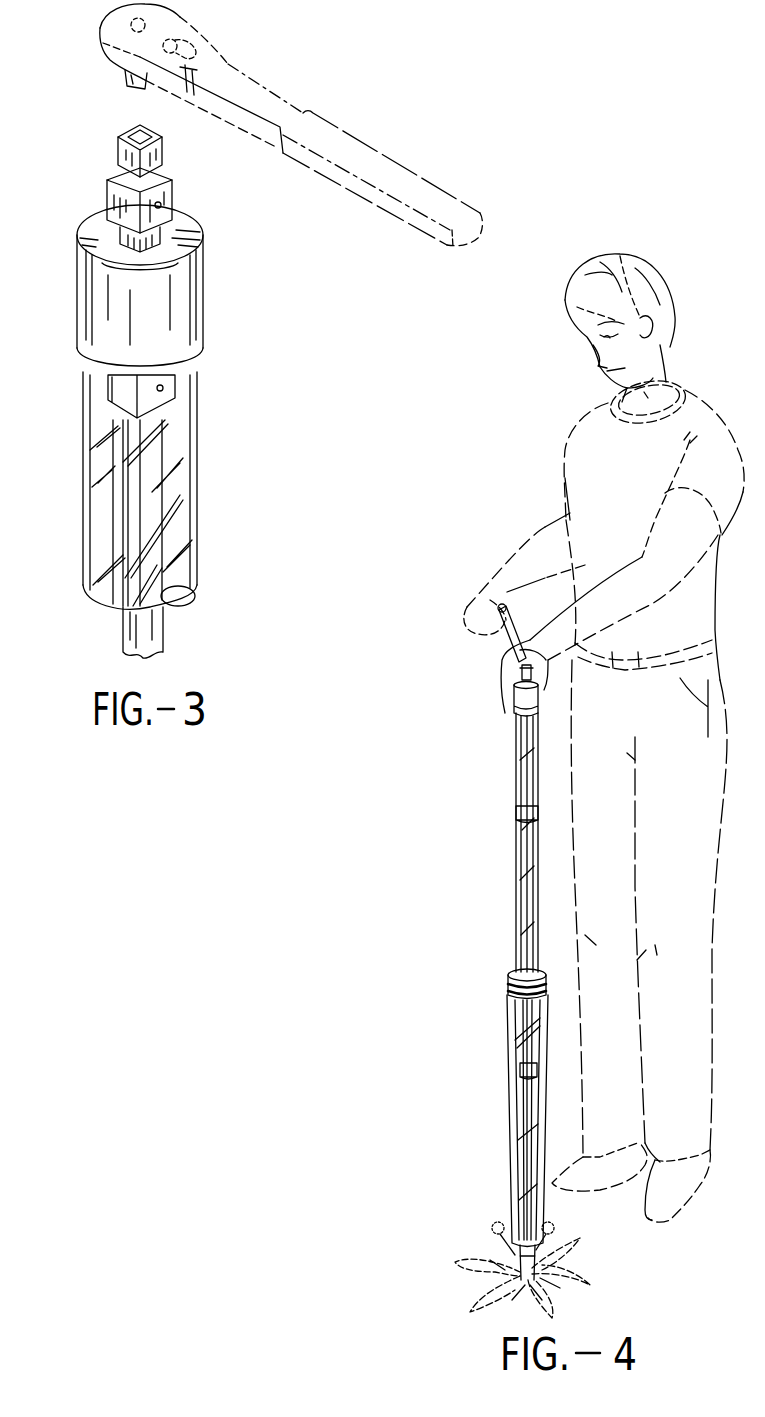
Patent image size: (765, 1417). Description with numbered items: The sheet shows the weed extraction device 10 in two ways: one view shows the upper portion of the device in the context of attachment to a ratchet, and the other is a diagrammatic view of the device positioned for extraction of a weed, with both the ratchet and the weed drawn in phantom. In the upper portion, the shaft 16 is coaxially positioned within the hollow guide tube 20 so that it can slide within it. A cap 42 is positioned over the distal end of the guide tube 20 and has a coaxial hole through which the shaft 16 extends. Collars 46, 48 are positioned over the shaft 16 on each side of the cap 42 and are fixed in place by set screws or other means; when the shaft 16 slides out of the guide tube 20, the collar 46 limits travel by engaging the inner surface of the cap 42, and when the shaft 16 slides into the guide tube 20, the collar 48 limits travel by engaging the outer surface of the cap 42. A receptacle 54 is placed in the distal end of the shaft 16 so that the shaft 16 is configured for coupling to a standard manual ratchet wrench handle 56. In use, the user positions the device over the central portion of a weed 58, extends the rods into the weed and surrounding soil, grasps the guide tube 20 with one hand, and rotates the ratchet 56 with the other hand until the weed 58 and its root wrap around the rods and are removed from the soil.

In FIG. 4, the weed extraction device 10 is at (490, 988).
In FIG. 3, the shaft 16 is at (163, 630).
In FIG. 3, the guide tube 20 is at (196, 483).
In FIG. 4, the guide tube 20 is at (514, 832).
In FIG. 3, the cap 42 is at (203, 300).
In FIG. 3, the collar 46 is at (178, 398).
In FIG. 3, the collar 48 is at (104, 191).
In FIG. 3, the receptacle 54 is at (126, 128).
In FIG. 3, the ratchet wrench handle 56 is at (267, 88).
In FIG. 4, the ratchet wrench handle 56 is at (498, 638).
In FIG. 4, the weed 58 is at (470, 1258).